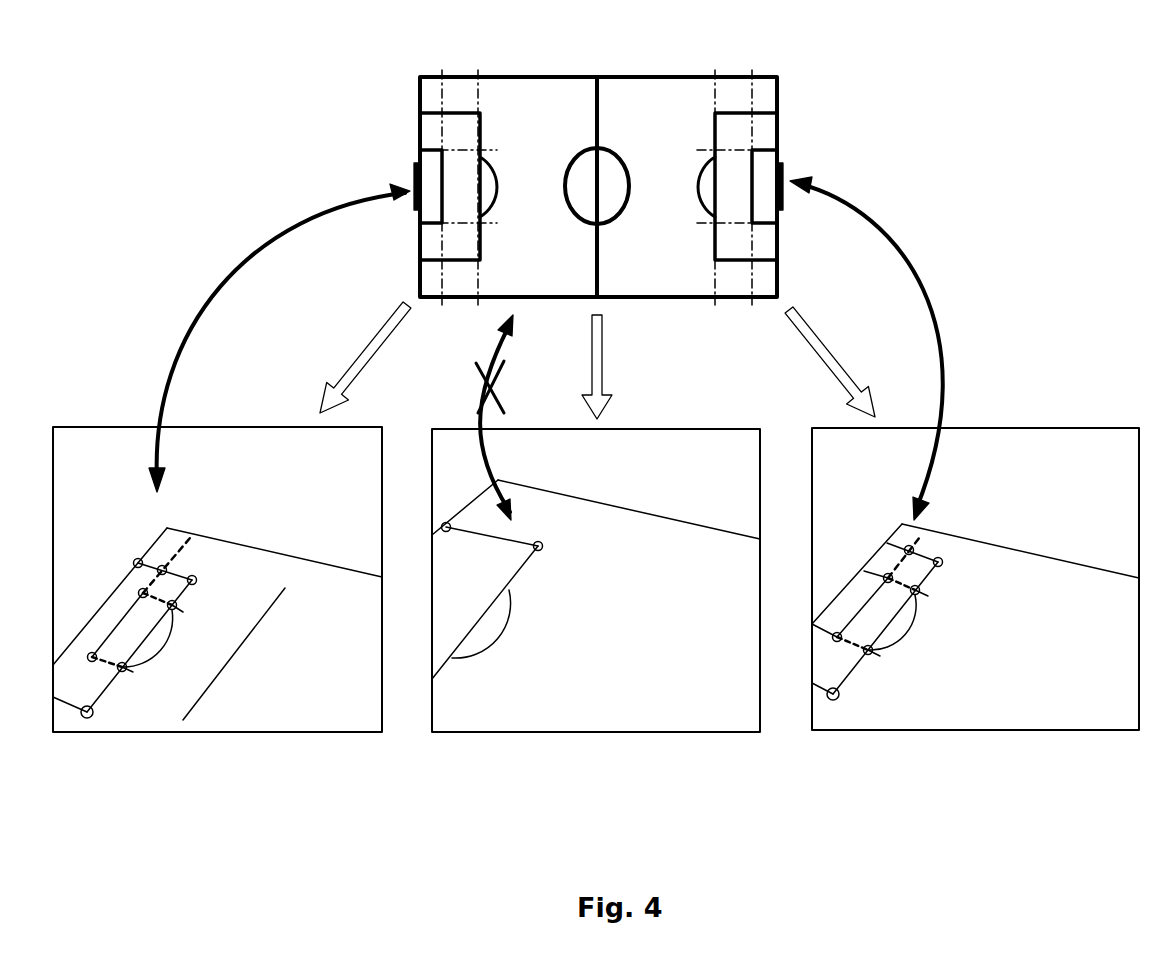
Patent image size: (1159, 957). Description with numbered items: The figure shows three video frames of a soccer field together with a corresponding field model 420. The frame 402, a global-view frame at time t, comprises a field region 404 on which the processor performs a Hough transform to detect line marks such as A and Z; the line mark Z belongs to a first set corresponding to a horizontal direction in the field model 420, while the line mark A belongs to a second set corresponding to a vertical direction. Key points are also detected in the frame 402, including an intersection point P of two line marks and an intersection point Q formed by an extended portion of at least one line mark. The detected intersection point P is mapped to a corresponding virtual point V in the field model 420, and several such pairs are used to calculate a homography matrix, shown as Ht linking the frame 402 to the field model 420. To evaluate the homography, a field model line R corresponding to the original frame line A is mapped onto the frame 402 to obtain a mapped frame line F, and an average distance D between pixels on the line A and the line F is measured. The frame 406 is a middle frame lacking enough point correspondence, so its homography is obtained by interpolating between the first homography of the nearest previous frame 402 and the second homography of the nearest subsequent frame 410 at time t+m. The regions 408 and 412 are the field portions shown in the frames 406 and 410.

The field model 420 is at (792, 76).
The frame 402 is at (217, 634).
The field region 404 is at (248, 710).
The frame 406 is at (596, 635).
The detected field lines and point candidates in image 406 408 is at (611, 706).
The frame 410 is at (977, 632).
The detected field lines and candidate points in image 410 412 is at (1047, 706).
The field model line R is at (481, 120).
The virtual point V is at (486, 262).
The first homography matrix Ht is at (279, 338).
The intersection point Q is at (180, 558).
The line mark Z is at (82, 645).
The line mark A is at (176, 602).
The average distance D is at (218, 663).
The mapped frame line F is at (257, 620).
The intersection point P is at (98, 723).